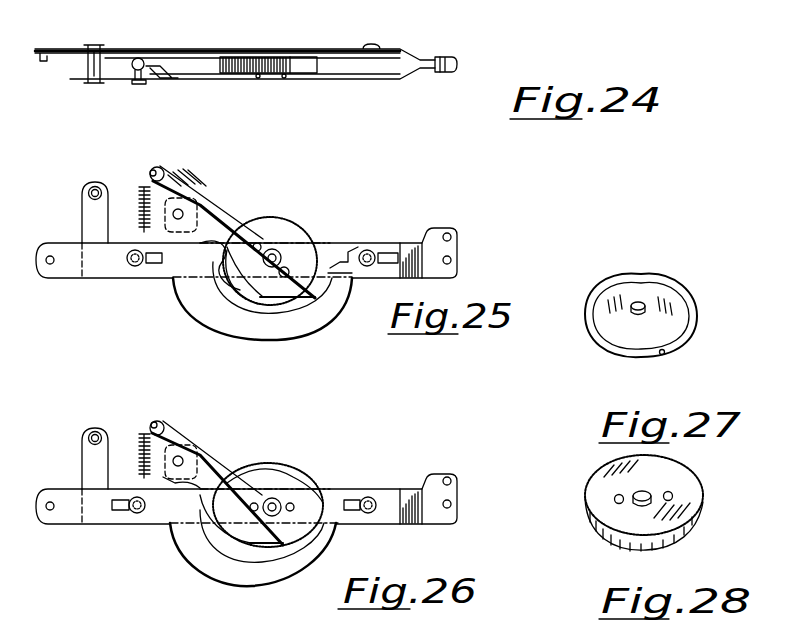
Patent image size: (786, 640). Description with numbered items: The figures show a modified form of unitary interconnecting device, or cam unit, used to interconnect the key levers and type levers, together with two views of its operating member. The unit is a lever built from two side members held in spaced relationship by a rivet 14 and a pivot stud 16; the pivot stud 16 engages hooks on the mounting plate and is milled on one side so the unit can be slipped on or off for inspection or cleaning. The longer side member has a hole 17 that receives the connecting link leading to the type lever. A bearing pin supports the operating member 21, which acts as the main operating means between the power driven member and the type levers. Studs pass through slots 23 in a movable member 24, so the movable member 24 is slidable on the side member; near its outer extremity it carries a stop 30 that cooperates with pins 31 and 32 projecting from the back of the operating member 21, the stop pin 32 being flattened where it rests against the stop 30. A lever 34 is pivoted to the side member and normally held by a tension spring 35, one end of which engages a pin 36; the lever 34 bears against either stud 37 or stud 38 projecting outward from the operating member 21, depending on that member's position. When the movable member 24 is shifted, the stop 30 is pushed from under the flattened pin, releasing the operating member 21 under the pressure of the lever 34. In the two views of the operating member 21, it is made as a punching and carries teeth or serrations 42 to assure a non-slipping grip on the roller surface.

In FIG. 24, the rivet 14 is at (446, 74).
In FIG. 25, the rivet 14 is at (452, 261).
In FIG. 26, the rivet 14 is at (452, 505).
In FIG. 24, the pivot stud 16 is at (87, 67).
In FIG. 25, the pivot stud 16 is at (91, 183).
In FIG. 26, the pivot stud 16 is at (91, 431).
In FIG. 25, the hole 17 is at (451, 237).
In FIG. 26, the hole 17 is at (451, 481).
In FIG. 24, the operating member 21 is at (301, 70).
In FIG. 25, the operating member 21 is at (268, 236).
In FIG. 26, the operating member 21 is at (270, 483).
In FIG. 28, the operating member 21 is at (642, 498).
In FIG. 25, the slots 23 is at (152, 266).
In FIG. 26, the slots 23 is at (118, 511).
In FIG. 24, the movable member 24 is at (68, 49).
In FIG. 25, the movable member 24 is at (260, 328).
In FIG. 26, the movable member 24 is at (255, 592).
In FIG. 25, the stop 30 is at (342, 258).
In FIG. 25, the pin 31 is at (315, 299).
In FIG. 27, the pin 31 is at (611, 273).
In FIG. 25, the stop pin 32 is at (257, 243).
In FIG. 27, the stop pin 32 is at (662, 356).
In FIG. 24, the lever 34 is at (172, 80).
In FIG. 25, the lever 34 is at (197, 215).
In FIG. 26, the lever 34 is at (216, 483).
In FIG. 25, the tension spring 35 is at (142, 196).
In FIG. 26, the tension spring 35 is at (144, 456).
In FIG. 24, the pin 36 is at (136, 84).
In FIG. 24, the stud 37 is at (257, 78).
In FIG. 25, the stud 37 is at (274, 250).
In FIG. 28, the stud 37 is at (616, 496).
In FIG. 24, the stud 38 is at (285, 78).
In FIG. 25, the stud 38 is at (287, 268).
In FIG. 28, the stud 38 is at (672, 493).
In FIG. 25, the teeth or serrations 42 is at (276, 216).
In FIG. 26, the teeth or serrations 42 is at (246, 471).
In FIG. 28, the teeth or serrations 42 is at (608, 534).